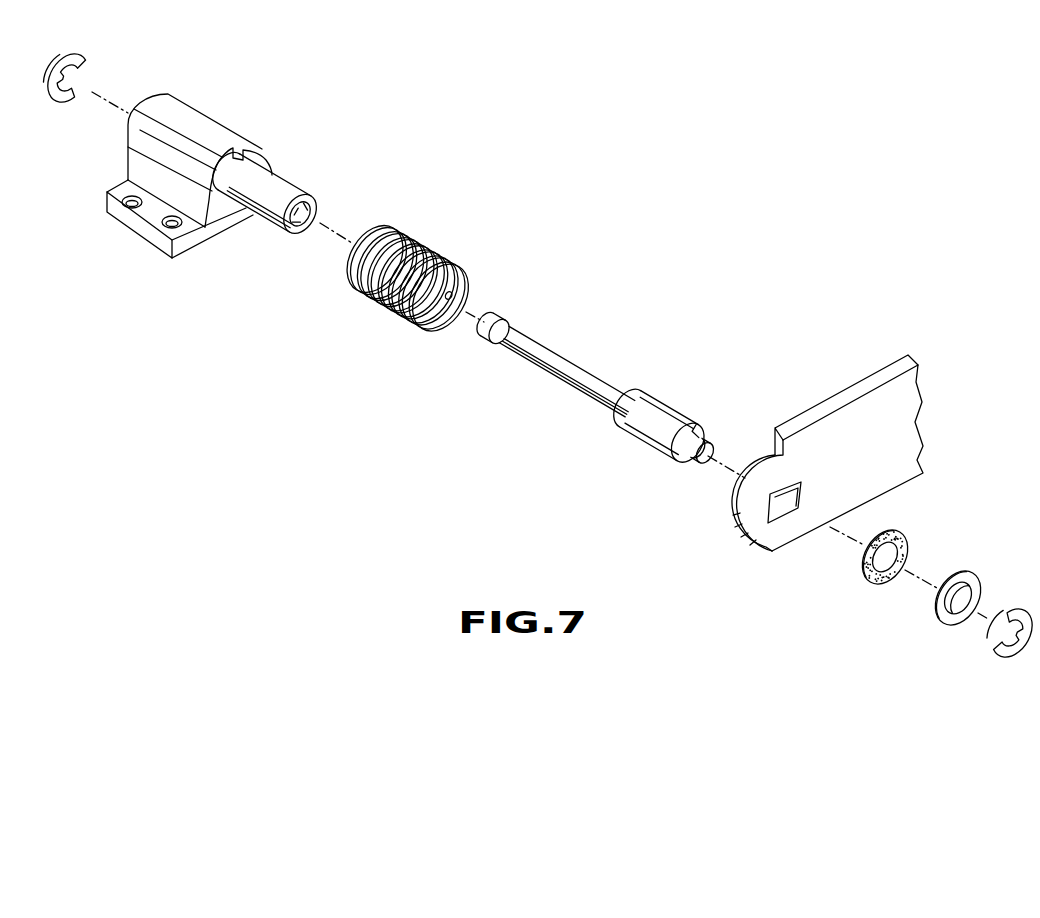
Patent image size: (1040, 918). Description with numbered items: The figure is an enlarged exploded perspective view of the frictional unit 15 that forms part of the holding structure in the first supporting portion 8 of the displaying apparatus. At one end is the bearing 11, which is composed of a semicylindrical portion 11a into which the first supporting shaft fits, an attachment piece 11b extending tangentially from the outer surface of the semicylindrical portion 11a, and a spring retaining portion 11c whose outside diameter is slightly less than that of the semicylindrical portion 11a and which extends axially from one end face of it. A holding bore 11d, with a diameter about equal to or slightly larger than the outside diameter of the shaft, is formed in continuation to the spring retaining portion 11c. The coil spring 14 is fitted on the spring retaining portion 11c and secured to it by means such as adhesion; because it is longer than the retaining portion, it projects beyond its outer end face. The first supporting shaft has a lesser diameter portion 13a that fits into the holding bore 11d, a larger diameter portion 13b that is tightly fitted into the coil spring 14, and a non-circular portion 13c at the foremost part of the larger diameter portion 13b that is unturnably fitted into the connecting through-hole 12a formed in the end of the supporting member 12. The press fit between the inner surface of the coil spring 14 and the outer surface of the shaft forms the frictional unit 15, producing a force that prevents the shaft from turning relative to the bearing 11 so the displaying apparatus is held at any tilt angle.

The first supporting portion 8 is at (700, 200).
The bearing 11 is at (201, 99).
The semicylindrical portion 11a is at (215, 140).
The attachment piece 11b is at (145, 224).
The spring retaining portion 11c is at (255, 217).
The holding bore 11d is at (298, 234).
The supporting member 12 is at (847, 408).
The connecting through-hole 12a is at (798, 503).
The lesser diameter portion 13a is at (552, 353).
The larger diameter portion 13b is at (642, 390).
The non-circular portion 13c is at (698, 428).
The coil spring 14 is at (423, 247).
The frictional unit 15 is at (597, 180).